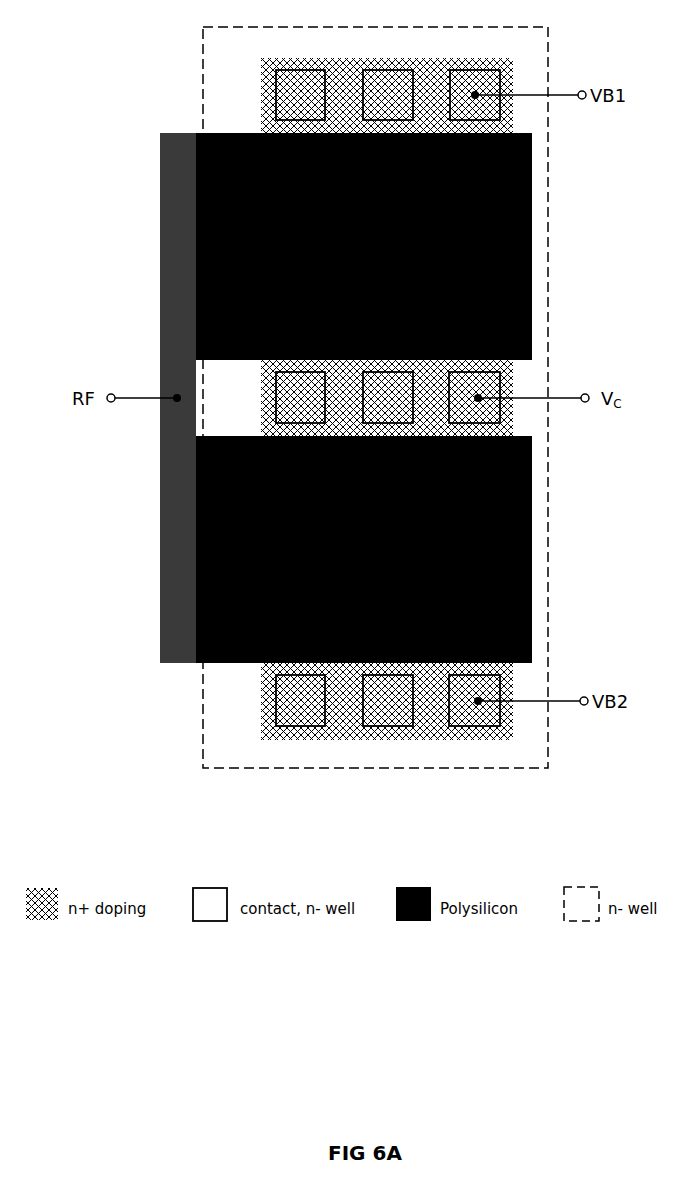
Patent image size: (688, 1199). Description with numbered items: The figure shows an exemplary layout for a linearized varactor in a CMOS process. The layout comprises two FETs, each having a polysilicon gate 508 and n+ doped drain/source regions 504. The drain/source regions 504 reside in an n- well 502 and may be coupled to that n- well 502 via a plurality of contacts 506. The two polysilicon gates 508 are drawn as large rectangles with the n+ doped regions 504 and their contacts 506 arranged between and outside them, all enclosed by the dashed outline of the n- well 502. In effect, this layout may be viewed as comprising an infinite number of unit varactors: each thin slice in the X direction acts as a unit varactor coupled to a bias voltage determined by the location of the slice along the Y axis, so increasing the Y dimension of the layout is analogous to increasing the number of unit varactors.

The n- well 502 is at (202, 42).
The n+ doped drain/source regions 504 is at (261, 95).
The contacts 506 is at (296, 70).
The polysilicon gate 508 is at (364, 398).